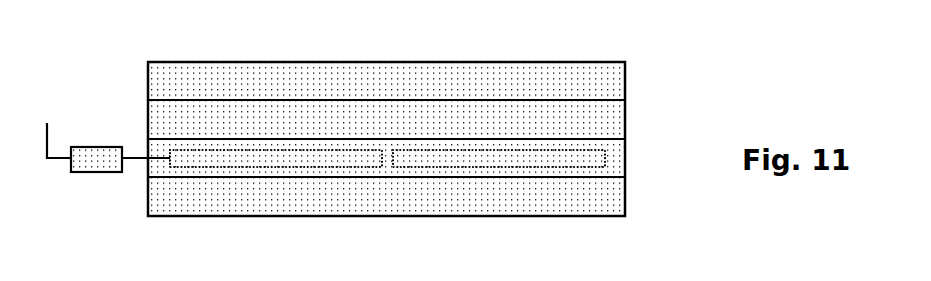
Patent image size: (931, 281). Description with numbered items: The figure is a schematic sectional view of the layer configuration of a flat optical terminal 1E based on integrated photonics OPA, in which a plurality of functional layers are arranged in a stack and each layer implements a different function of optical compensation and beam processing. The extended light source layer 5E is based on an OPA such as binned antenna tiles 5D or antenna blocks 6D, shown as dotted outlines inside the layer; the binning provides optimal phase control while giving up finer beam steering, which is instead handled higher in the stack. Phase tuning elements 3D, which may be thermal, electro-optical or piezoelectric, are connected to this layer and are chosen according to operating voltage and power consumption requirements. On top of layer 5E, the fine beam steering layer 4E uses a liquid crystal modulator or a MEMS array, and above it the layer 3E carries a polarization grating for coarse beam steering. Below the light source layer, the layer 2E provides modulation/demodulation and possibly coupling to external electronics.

The flat optical terminal 1E is at (101, 54).
The layer for modulation/demodulation 2E is at (625, 192).
The polarization grating layer 3E is at (625, 73).
The fine beam steering layer 4E is at (625, 113).
The extended light source layer 5E is at (625, 152).
The phase tuning elements 3D is at (100, 172).
The binned antenna tiles 5D is at (327, 167).
The antenna blocks 6D is at (551, 167).